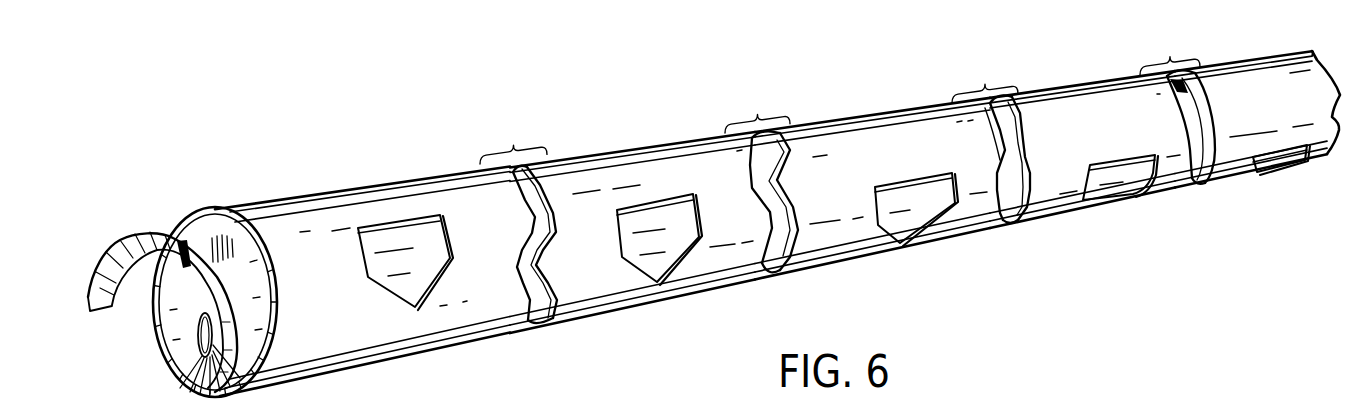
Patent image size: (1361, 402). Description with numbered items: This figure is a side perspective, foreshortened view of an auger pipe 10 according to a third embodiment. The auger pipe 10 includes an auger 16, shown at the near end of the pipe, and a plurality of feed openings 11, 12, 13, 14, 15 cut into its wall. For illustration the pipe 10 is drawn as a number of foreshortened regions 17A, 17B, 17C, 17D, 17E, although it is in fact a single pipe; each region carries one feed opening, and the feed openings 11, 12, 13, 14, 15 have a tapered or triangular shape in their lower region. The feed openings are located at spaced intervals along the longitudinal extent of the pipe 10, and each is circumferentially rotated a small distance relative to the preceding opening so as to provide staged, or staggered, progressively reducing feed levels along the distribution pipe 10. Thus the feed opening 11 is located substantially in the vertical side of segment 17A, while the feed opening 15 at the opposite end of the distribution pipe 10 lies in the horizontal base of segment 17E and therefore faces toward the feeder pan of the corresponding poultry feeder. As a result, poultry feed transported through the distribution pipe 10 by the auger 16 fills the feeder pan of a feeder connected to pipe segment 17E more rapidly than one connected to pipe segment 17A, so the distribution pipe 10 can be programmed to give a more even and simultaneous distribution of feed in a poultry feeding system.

The auger pipe 10 is at (275, 184).
The feed opening 11 is at (411, 283).
The feed opening 12 is at (662, 250).
The feed opening 13 is at (918, 207).
The feed opening 14 is at (1115, 178).
The feed opening 15 is at (1278, 170).
The auger 16 is at (113, 260).
The foreshortened region 17A is at (397, 203).
The foreshortened region 17B is at (637, 170).
The foreshortened region 17C is at (863, 147).
The foreshortened region 17D is at (1097, 100).
The foreshortened region 17E is at (1245, 88).